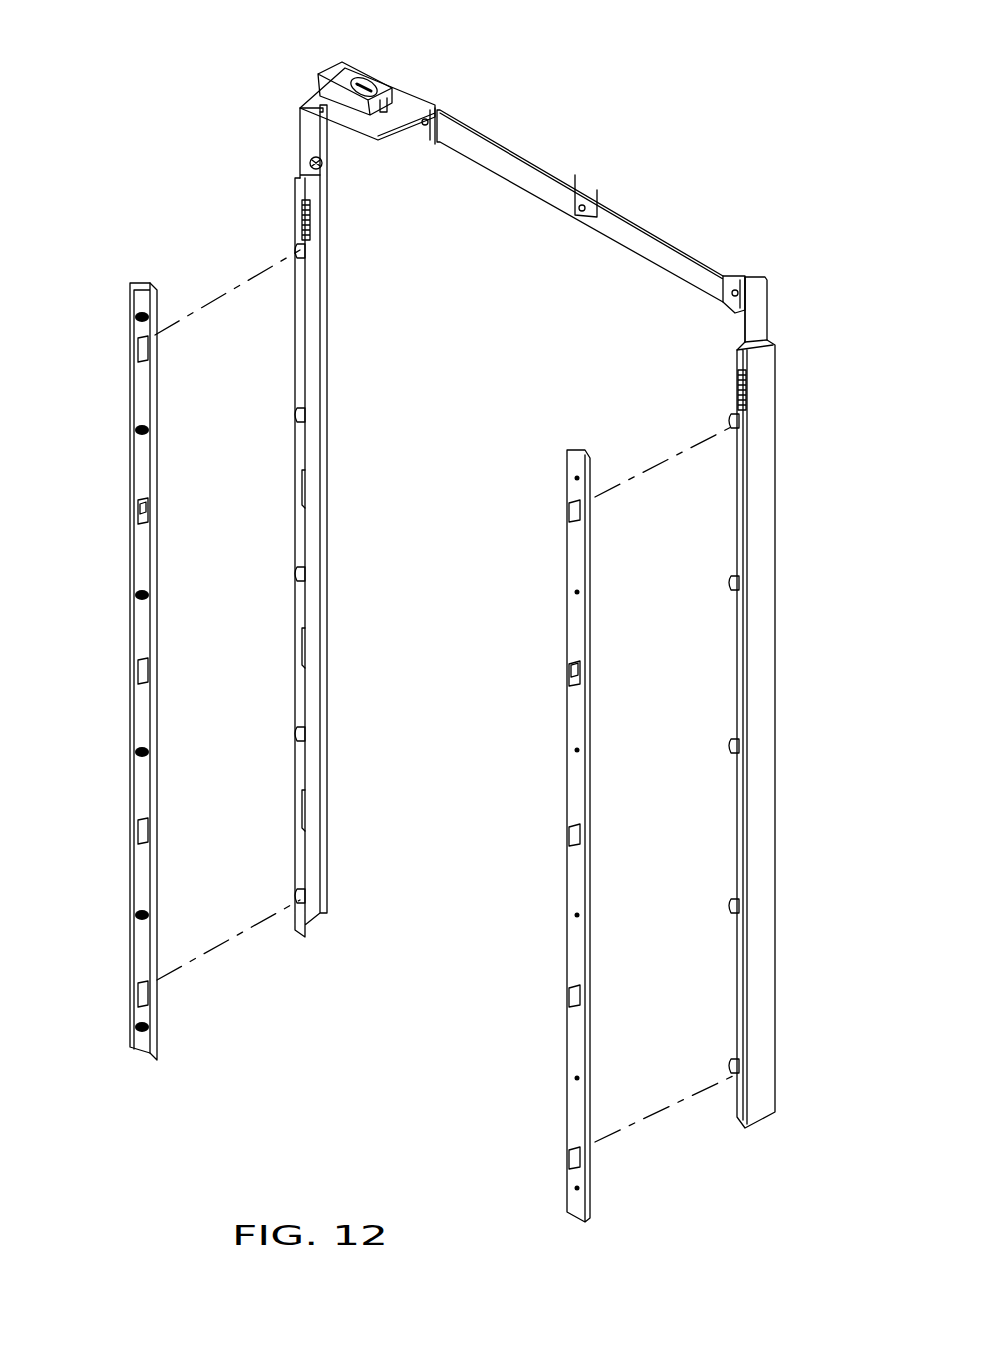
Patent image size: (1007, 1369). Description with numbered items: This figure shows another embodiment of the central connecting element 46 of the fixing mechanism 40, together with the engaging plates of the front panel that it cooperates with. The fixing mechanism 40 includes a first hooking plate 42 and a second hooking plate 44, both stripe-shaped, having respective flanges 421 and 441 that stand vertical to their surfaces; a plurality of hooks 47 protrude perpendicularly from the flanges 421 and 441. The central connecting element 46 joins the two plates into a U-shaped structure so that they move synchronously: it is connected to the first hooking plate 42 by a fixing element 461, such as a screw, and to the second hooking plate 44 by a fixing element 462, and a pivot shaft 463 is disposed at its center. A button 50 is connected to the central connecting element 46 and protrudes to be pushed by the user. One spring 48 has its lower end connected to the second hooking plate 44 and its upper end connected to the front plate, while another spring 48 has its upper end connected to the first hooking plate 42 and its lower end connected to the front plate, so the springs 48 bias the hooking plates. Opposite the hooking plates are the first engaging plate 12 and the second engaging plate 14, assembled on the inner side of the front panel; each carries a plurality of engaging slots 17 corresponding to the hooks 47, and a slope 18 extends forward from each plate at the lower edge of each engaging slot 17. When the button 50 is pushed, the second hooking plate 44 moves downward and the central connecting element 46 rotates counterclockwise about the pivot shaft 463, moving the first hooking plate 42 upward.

The first engaging plate 12 is at (575, 1055).
The second engaging plate 14 is at (145, 712).
The engaging slot 17 is at (145, 505).
The slope 18 is at (145, 518).
The fixing mechanism 40 is at (652, 138).
The first hooking plate 42 is at (767, 650).
The flange 421 is at (742, 500).
The second hooking plate 44 is at (318, 533).
The flange 441 is at (305, 300).
The central connecting element 46 is at (420, 93).
The fixing element 461 is at (738, 288).
The fixing element 462 is at (425, 126).
The pivot shaft 463 is at (580, 212).
The hook 47 is at (310, 252).
The spring 48 is at (310, 222).
The button 50 is at (355, 75).